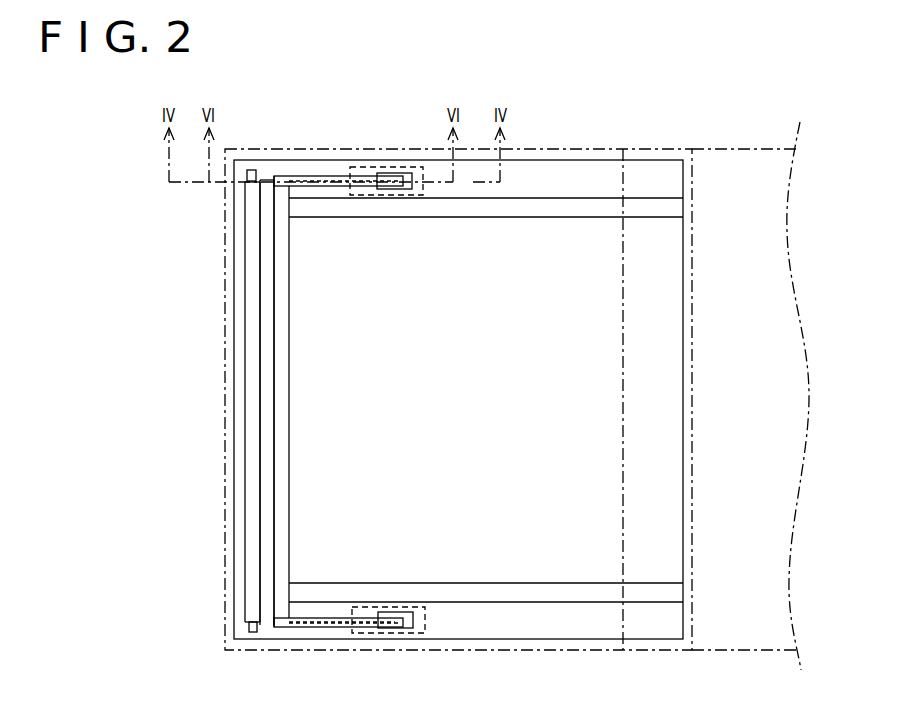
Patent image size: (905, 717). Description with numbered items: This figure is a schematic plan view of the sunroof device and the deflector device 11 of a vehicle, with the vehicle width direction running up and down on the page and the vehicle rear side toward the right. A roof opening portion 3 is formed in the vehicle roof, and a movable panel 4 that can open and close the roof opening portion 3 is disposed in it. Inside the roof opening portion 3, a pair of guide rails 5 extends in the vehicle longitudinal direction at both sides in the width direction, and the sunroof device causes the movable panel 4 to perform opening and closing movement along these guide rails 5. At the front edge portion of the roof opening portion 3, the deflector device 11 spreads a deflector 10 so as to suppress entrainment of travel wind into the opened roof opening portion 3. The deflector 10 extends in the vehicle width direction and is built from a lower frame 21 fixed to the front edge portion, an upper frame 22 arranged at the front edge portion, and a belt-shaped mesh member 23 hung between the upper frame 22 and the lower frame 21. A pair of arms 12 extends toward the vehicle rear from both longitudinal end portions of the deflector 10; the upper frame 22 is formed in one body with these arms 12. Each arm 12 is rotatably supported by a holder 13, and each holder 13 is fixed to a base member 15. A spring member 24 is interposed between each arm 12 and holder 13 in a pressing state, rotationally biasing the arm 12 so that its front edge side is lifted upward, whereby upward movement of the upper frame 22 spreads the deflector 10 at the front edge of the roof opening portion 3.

The roof opening portion 3 is at (228, 345).
The movable panel 4 is at (622, 422).
The guide rails 5 is at (530, 217).
The deflector 10 is at (325, 401).
The deflector device 11 is at (125, 136).
The arms 12 is at (333, 176).
The holders 13 is at (406, 173).
The base member 15 is at (425, 196).
The lower frame 21 is at (253, 437).
The upper frame 22 is at (348, 457).
The mesh member 23 is at (265, 405).
The spring members 24 is at (356, 196).